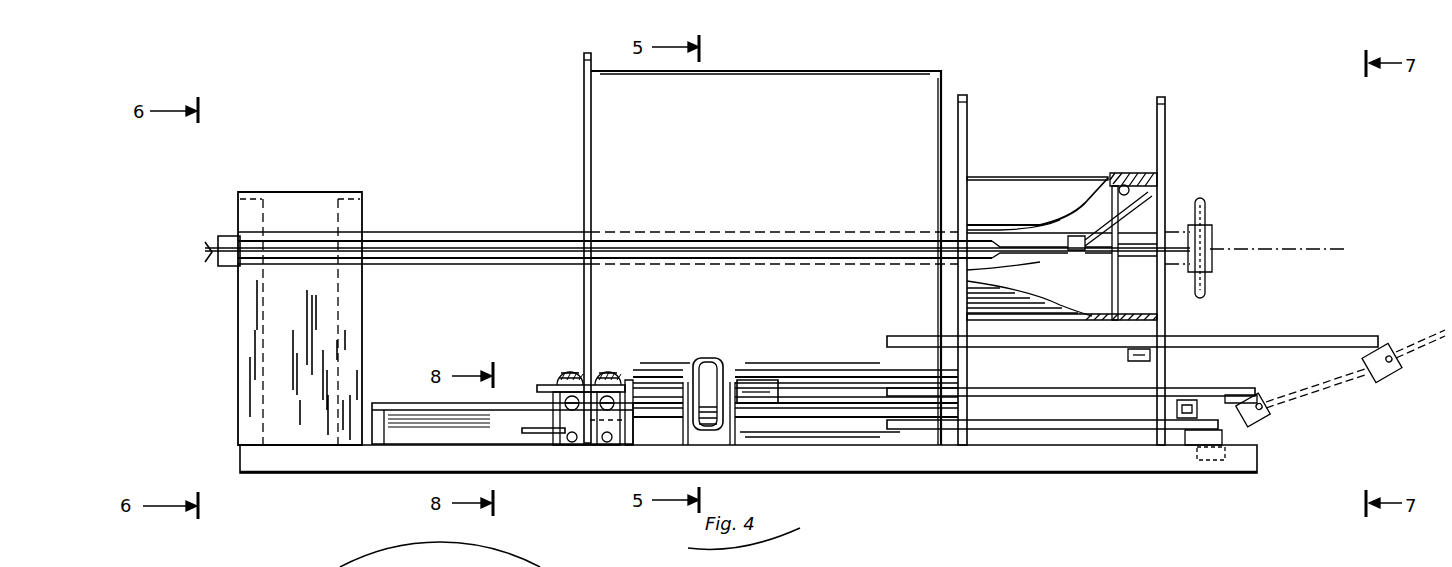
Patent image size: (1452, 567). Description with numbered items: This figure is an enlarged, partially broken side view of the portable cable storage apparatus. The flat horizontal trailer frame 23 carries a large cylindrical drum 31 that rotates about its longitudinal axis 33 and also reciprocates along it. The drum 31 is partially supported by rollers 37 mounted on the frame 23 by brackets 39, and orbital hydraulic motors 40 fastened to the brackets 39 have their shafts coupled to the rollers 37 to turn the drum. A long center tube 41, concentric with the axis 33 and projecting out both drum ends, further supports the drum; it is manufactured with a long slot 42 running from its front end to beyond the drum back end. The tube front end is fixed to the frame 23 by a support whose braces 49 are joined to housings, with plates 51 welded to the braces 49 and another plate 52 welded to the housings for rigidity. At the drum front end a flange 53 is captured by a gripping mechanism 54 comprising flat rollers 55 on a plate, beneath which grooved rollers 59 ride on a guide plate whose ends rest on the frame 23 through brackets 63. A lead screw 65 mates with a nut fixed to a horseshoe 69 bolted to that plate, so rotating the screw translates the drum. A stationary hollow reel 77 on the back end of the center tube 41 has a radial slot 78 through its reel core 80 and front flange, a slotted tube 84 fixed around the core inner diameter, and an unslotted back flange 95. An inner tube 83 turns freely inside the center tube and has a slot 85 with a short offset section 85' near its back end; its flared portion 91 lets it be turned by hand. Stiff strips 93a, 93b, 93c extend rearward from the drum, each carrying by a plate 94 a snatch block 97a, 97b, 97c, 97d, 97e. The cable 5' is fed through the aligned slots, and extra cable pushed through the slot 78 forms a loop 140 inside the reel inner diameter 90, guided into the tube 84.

The frame 23 is at (1062, 462).
The drum 31 is at (800, 71).
The longitudinal axis 33 is at (1345, 240).
The rollers 37 is at (710, 358).
The brackets 39 is at (690, 440).
The orbital hydraulic motors 40 is at (760, 383).
The center tube 41 is at (537, 232).
The slot 42 is at (470, 240).
The braces 49 is at (250, 360).
The plates 51 is at (300, 335).
The plate 52 is at (322, 193).
The flange 53 is at (583, 72).
The gripping mechanism 54 is at (632, 355).
The flat rollers 55 is at (606, 367).
The grooved rollers 59 is at (606, 443).
The brackets 63 is at (632, 443).
The lead screw 65 is at (535, 432).
The horseshoe 69 is at (548, 434).
The reel 77 is at (1184, 132).
The radial slot 78 is at (975, 230).
The reel core 80 is at (1022, 178).
The inner tube 83 is at (1080, 252).
The slotted tube 84 is at (1165, 300).
The slot 85 is at (767, 287).
The offset section of longitudinal slot 85' is at (1003, 275).
The reel inner diameter 90 is at (1122, 185).
The flared portion 91 is at (218, 238).
The strip 93a is at (1272, 340).
The strip 93b is at (995, 390).
The strip 93c is at (1050, 426).
The plate 94 is at (1195, 433).
The back flange 95 is at (1168, 100).
The snatch block 97a is at (1388, 372).
The snatch block 97b is at (1270, 412).
The snatch block 97c is at (1200, 462).
The snatch block 97d is at (1188, 400).
The snatch block 97e is at (1126, 355).
The cable loop 140 is at (1168, 226).
The cable 5' is at (804, 292).